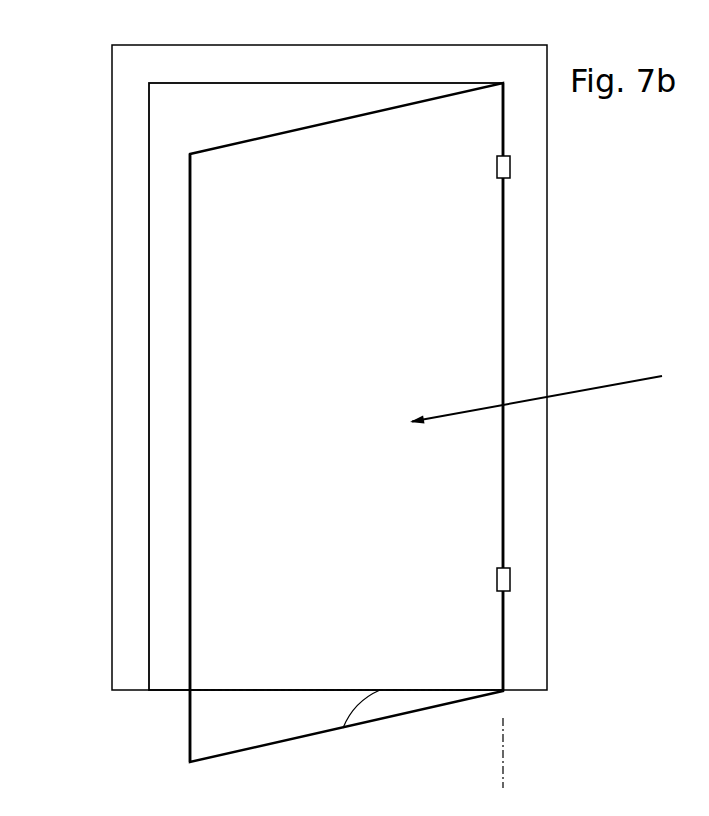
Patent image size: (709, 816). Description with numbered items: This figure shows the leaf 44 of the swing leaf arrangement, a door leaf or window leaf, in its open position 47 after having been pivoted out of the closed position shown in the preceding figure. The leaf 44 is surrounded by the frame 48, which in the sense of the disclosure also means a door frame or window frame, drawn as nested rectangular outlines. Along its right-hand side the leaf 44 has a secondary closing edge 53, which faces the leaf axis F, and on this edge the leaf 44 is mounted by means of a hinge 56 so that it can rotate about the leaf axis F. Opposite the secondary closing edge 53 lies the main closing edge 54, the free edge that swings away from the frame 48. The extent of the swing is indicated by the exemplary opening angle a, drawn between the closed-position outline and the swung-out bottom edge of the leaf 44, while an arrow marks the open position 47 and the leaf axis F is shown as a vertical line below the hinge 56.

The leaf 44 is at (370, 467).
The open position 47 is at (555, 393).
The frame 48 is at (525, 213).
The secondary closing edge 53 is at (505, 311).
The main closing edge 54 is at (190, 202).
The hinge 56 is at (511, 170).
The opening angle a is at (369, 708).
The leaf axis F is at (520, 753).